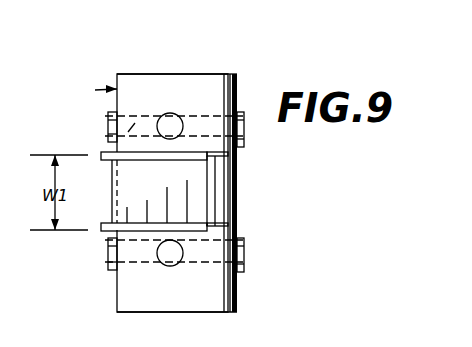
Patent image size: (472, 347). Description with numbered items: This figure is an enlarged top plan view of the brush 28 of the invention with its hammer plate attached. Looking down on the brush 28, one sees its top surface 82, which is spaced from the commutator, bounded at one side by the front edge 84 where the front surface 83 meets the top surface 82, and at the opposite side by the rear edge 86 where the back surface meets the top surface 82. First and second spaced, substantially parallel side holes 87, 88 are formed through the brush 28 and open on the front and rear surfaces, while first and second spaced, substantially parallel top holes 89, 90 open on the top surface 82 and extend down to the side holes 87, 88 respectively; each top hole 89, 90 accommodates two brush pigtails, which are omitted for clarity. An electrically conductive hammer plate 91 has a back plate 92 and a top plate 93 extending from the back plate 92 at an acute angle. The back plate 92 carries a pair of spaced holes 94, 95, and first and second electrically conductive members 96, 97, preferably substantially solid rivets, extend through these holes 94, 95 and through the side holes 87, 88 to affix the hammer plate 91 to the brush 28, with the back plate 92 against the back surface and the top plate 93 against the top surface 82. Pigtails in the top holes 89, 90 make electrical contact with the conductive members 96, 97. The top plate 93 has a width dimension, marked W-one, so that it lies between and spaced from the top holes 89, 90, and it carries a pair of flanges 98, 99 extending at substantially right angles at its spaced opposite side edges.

The brush 28 is at (133, 83).
The top surface 82 is at (200, 83).
The front surface 83 is at (91, 88).
The front edge 84 is at (113, 236).
The rear edge 86 is at (218, 300).
The first side hole 87 is at (150, 243).
The second side hole 88 is at (108, 128).
The first top hole 89 is at (170, 250).
The second top hole 90 is at (170, 123).
The hammer plate 91 is at (222, 198).
The back plate 92 is at (238, 80).
The top plate 93 is at (135, 183).
The hole 94 is at (238, 278).
The hole 95 is at (240, 153).
The first electrically conductive member 96 is at (244, 258).
The second electrically conductive member 97 is at (244, 138).
The flange 98 is at (191, 223).
The flange 99 is at (190, 163).